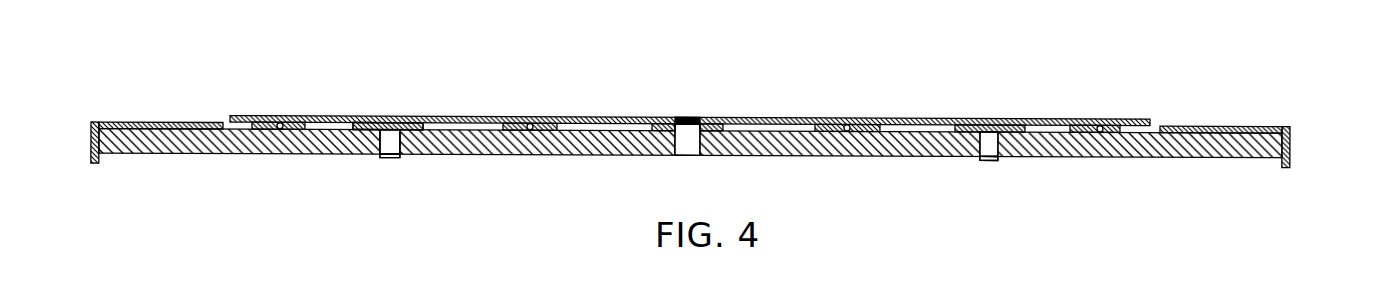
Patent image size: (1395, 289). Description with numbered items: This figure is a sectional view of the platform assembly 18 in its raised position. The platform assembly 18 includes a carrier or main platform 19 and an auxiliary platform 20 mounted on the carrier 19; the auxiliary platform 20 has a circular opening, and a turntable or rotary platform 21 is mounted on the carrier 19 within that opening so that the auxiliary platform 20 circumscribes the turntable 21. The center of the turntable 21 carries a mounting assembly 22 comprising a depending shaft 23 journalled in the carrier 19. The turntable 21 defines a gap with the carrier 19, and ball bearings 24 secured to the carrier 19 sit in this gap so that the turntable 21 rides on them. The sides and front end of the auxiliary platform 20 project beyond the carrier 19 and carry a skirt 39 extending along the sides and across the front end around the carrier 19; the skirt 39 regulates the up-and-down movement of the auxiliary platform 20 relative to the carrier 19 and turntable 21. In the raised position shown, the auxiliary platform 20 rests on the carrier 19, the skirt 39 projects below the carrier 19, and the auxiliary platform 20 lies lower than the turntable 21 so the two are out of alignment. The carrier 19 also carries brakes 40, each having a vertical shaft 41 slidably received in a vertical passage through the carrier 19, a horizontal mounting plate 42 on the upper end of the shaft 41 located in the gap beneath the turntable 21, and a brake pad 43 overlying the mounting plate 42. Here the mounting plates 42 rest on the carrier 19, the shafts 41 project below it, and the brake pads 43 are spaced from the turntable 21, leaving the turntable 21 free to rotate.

The platform assembly 18 is at (1300, 100).
The carrier 19 is at (950, 153).
The auxiliary platform 20 is at (1193, 128).
The turntable 21 is at (1040, 118).
The mounting assembly 22 is at (700, 98).
The shaft 23 is at (682, 143).
The ball bearings 24 is at (885, 120).
The skirt 39 is at (1292, 147).
The brakes 40 is at (366, 178).
The vertical shaft 41 is at (393, 158).
The mounting plate 42 is at (360, 128).
The brake pad 43 is at (413, 127).